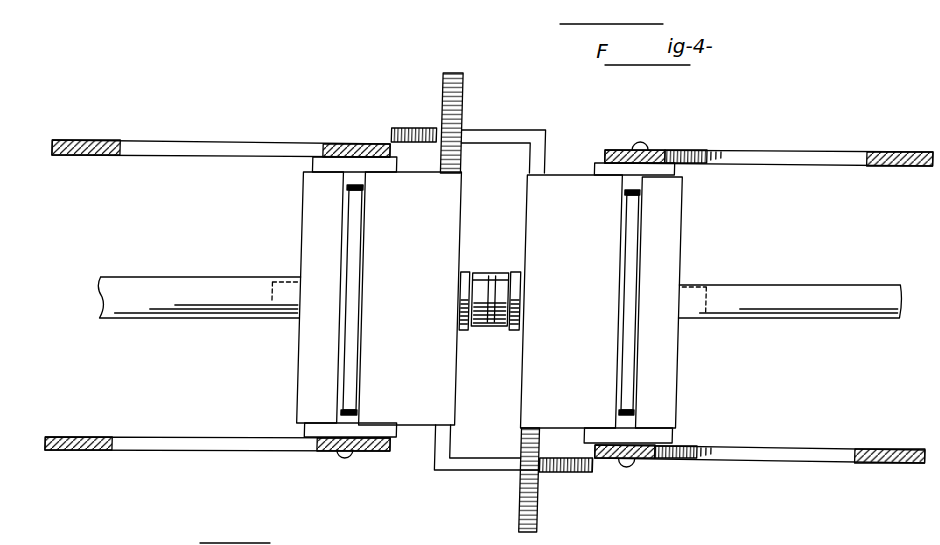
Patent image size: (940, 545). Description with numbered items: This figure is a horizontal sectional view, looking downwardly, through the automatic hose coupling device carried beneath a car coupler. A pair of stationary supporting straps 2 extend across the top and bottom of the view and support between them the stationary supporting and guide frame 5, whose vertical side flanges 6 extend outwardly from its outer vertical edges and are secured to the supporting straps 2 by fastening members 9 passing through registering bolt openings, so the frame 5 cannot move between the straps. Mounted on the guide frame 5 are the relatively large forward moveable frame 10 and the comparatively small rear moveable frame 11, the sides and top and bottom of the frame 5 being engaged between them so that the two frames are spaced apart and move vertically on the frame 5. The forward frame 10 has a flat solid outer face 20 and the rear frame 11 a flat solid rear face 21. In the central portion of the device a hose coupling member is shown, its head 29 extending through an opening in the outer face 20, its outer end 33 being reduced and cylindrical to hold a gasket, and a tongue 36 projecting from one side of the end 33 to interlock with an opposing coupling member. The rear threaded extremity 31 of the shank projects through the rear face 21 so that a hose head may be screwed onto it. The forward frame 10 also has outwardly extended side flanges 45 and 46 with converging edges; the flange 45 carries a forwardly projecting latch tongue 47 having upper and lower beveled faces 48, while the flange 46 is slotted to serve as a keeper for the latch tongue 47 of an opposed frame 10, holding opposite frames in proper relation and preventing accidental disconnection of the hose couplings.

The stationary supporting straps 2 is at (92, 157).
The stationary supporting and guide frame 5 is at (355, 245).
The vertical side flanges 6 is at (309, 162).
The fastening members 9 is at (640, 144).
The forward moveable frame 10 is at (440, 233).
The rear moveable frame 11 is at (315, 372).
The flat solid outer face 20 is at (462, 203).
The flat solid rear face 21 is at (292, 216).
The head of hose coupling member 29 is at (518, 300).
The rear threaded extremity of shank 31 is at (252, 321).
The reduced outer end of head 33 is at (498, 288).
The tongue 36 is at (492, 272).
The side flange 45 is at (547, 137).
The side flange 46 is at (453, 110).
The latch tongue 47 is at (428, 142).
The beveled faces 48 is at (393, 128).